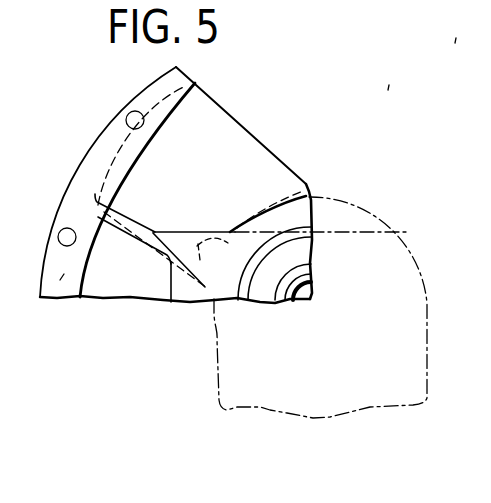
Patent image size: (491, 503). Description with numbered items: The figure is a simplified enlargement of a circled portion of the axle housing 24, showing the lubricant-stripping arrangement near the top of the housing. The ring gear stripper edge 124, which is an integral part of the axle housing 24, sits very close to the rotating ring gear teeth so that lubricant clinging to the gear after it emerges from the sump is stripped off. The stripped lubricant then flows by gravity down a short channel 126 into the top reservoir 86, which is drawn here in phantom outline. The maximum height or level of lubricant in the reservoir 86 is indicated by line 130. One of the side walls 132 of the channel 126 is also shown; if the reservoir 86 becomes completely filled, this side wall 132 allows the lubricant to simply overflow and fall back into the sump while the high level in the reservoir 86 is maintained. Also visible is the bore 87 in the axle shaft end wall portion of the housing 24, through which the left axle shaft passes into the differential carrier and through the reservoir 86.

The axle housing 24 is at (84, 141).
The ring gear stripper edge 124 is at (131, 212).
The channel 126 is at (170, 305).
The side wall 132 is at (183, 231).
The bore 87 is at (307, 283).
The line 130 is at (365, 231).
The reservoir 86 is at (250, 359).